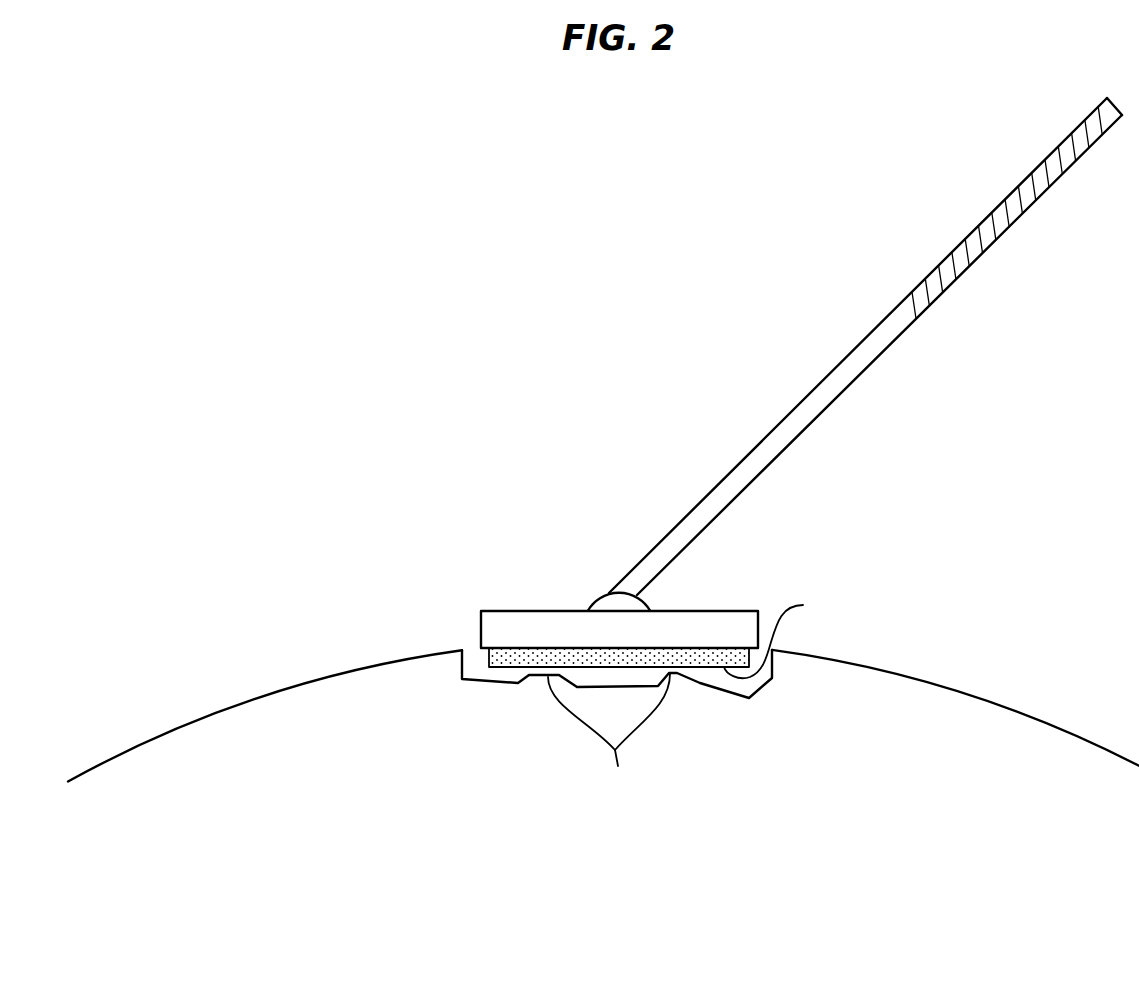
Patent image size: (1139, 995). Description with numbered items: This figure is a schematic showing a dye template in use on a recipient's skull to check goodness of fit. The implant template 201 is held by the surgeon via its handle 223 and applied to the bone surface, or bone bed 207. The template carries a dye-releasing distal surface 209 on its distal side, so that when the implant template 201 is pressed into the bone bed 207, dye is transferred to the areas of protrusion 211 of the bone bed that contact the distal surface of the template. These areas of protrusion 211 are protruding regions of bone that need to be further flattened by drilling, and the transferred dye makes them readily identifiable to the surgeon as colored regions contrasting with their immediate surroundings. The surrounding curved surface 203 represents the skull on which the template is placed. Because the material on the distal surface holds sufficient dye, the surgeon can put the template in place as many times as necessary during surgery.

The implant template 201 is at (801, 382).
The curved surface 203 is at (1080, 737).
The bone bed 207 is at (483, 696).
The dye-releasing distal surface 209 is at (780, 636).
The areas of protrusion 211 is at (609, 737).
The handle 223 is at (782, 420).